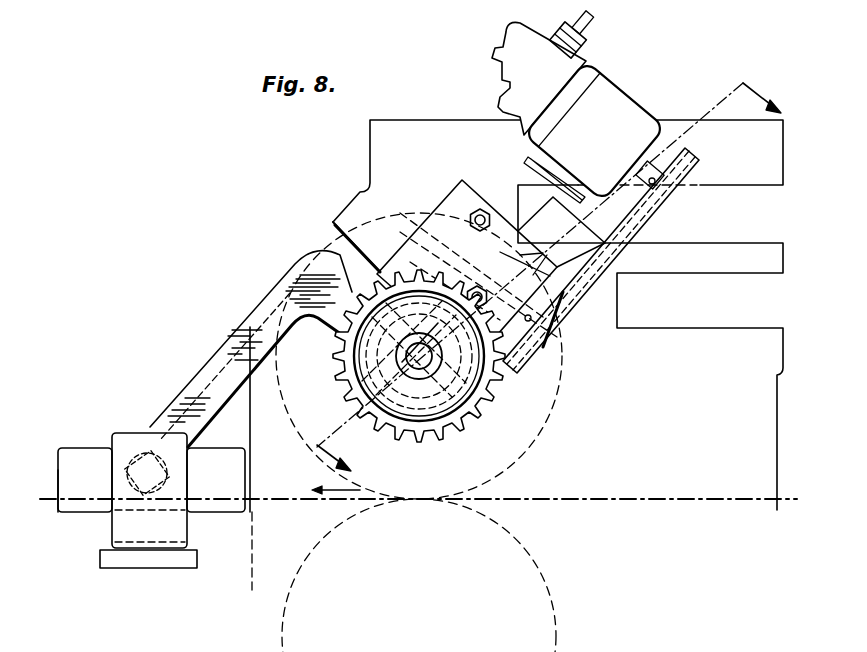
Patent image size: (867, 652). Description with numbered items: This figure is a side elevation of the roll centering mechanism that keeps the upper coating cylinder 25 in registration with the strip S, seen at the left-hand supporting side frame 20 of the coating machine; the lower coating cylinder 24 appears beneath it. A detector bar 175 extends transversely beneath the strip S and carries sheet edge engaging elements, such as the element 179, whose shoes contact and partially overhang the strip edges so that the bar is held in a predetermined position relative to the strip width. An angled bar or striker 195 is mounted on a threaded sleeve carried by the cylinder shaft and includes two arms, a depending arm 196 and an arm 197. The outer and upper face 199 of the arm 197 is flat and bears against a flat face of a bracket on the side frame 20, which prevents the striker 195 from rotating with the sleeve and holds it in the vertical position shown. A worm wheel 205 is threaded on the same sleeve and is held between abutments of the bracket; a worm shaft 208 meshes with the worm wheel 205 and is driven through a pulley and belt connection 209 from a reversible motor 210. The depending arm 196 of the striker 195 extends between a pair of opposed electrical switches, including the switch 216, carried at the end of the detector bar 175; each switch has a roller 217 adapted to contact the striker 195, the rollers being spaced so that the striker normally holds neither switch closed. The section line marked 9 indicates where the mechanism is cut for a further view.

The supporting side frame 20 is at (462, 132).
The lower coating cylinder 24 is at (535, 562).
The upper coating cylinder 25 is at (550, 413).
The detector bar 175 is at (155, 563).
The sheet edge engaging element 179 is at (93, 507).
The striker 195 is at (200, 372).
The depending arm 196 is at (110, 480).
The arm 197 is at (377, 277).
The flat face 199 is at (392, 266).
The worm wheel 205 is at (477, 423).
The worm shaft 208 is at (523, 240).
The pulley and belt connection 209 is at (645, 238).
The reversible motor 210 is at (637, 108).
The electrical switch 216 is at (115, 437).
The roller 217 is at (138, 445).
The section line 9- 9 is at (541, 277).
The strip S is at (668, 500).